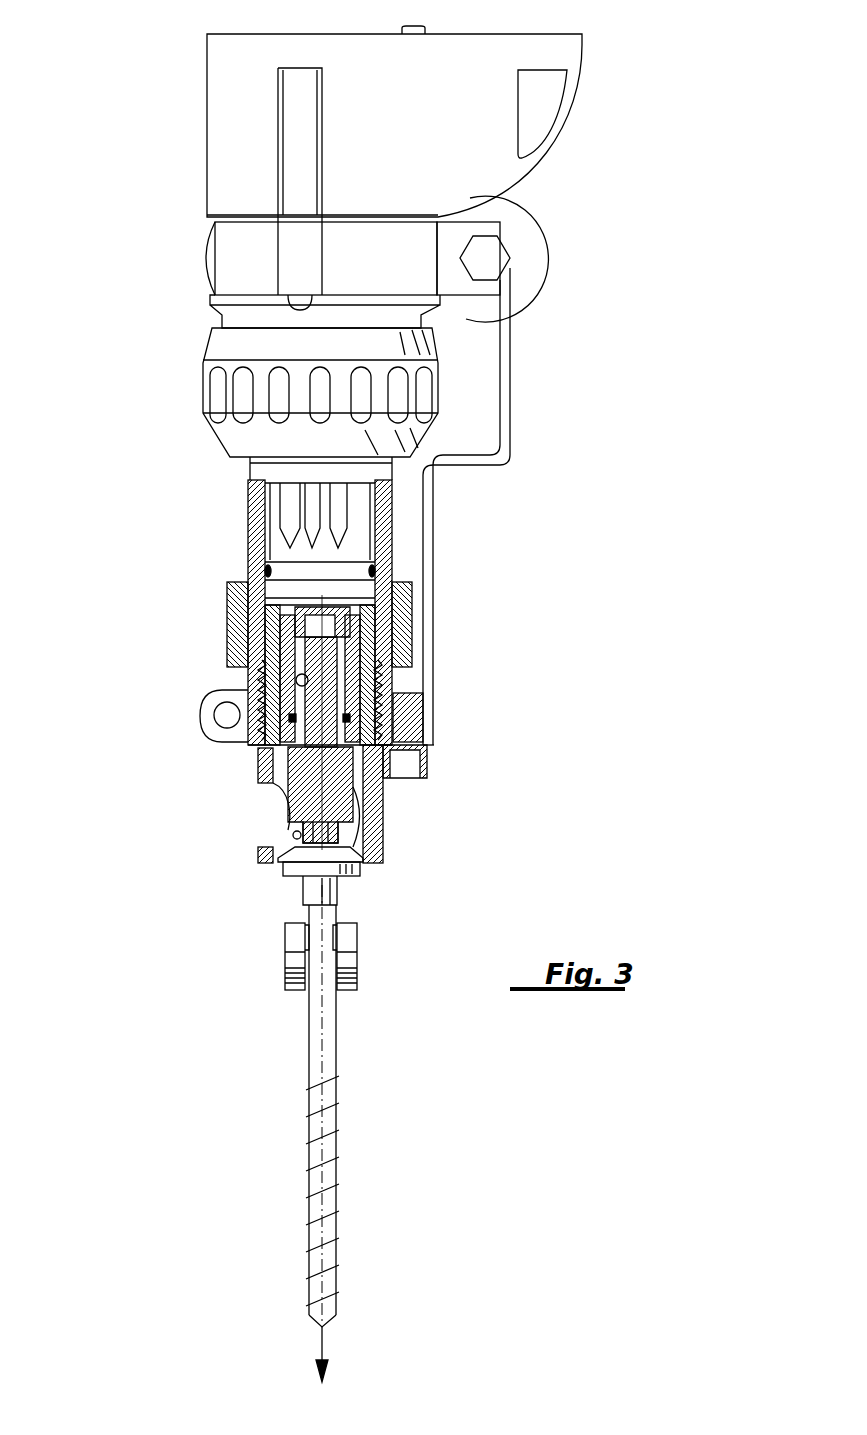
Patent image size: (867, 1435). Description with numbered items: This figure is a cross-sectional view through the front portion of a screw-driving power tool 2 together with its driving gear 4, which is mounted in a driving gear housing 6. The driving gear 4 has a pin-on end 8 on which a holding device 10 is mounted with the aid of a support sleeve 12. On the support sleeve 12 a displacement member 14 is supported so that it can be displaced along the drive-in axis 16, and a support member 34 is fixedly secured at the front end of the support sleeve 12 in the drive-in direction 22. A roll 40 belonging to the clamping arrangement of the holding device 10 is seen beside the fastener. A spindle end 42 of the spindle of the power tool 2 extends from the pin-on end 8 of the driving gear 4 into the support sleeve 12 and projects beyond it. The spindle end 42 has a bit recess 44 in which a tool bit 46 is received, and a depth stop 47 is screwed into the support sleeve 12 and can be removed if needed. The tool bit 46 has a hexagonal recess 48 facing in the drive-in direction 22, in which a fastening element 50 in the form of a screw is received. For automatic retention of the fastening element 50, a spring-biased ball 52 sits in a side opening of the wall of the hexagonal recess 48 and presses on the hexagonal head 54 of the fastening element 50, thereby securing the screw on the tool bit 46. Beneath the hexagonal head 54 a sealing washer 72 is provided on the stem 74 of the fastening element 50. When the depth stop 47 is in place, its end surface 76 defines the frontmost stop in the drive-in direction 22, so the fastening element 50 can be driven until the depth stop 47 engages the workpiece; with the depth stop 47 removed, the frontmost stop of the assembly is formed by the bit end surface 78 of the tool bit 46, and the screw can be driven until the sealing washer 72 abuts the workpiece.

The screw-driving power tool 2 is at (126, 150).
The driving gear 4 is at (409, 125).
The driving gear housing 6 is at (497, 155).
The pin-on end 8 is at (358, 522).
The holding device 10 is at (537, 740).
The support sleeve 12 is at (387, 570).
The displacement member 14 is at (237, 630).
The drive-in axis 16 is at (335, 1155).
The drive-in direction 22 is at (322, 1338).
The support member 34 is at (213, 730).
The roll 40 is at (348, 952).
The spindle end 42 is at (343, 608).
The bit recess 44 is at (330, 678).
The tool bit 46 is at (337, 770).
The depth stop 47 is at (392, 723).
The hexagonal recess 48 is at (337, 813).
The fastening element 50 is at (348, 1210).
The spring-biased ball 52 is at (294, 835).
The hexagonal head 54 is at (328, 832).
The sealing washer 72 is at (350, 873).
The stem 74 is at (317, 1067).
The end surface 76 is at (270, 865).
The bit end surface 78 is at (363, 852).